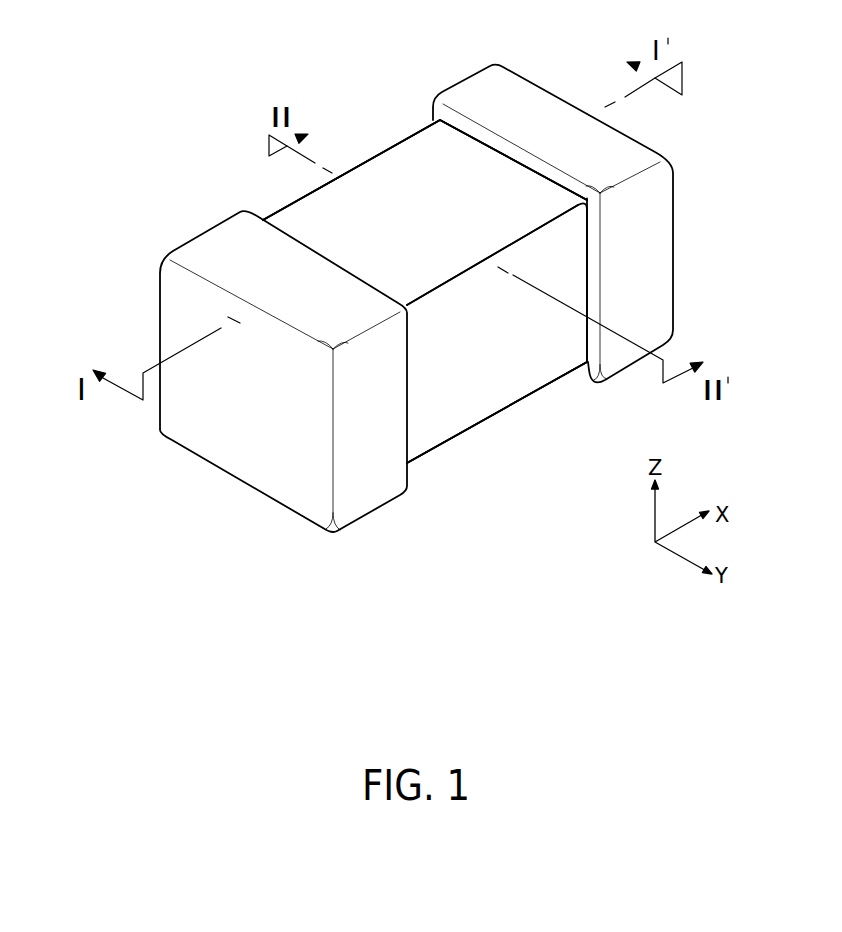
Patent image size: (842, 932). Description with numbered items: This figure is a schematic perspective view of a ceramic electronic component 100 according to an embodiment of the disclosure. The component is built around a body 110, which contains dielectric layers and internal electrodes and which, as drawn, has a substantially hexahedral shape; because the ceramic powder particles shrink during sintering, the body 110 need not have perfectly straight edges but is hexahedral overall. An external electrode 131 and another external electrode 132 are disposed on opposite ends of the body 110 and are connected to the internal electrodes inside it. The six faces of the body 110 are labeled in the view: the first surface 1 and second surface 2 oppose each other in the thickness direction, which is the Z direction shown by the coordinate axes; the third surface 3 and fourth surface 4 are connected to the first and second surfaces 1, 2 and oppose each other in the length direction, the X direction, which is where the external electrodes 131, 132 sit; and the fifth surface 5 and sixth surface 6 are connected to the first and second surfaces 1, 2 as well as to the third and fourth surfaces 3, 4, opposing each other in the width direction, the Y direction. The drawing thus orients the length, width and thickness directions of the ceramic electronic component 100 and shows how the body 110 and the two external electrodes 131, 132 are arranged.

The ceramic electronic component 100 is at (202, 31).
The body 110 is at (297, 230).
The external electrode 131 is at (218, 245).
The external electrode 132 is at (475, 100).
The first surface 1 is at (458, 383).
The second surface 2 is at (435, 176).
The third surface 3 is at (257, 427).
The fourth surface 4 is at (622, 237).
The fifth surface 5 is at (513, 353).
The sixth surface 6 is at (378, 202).